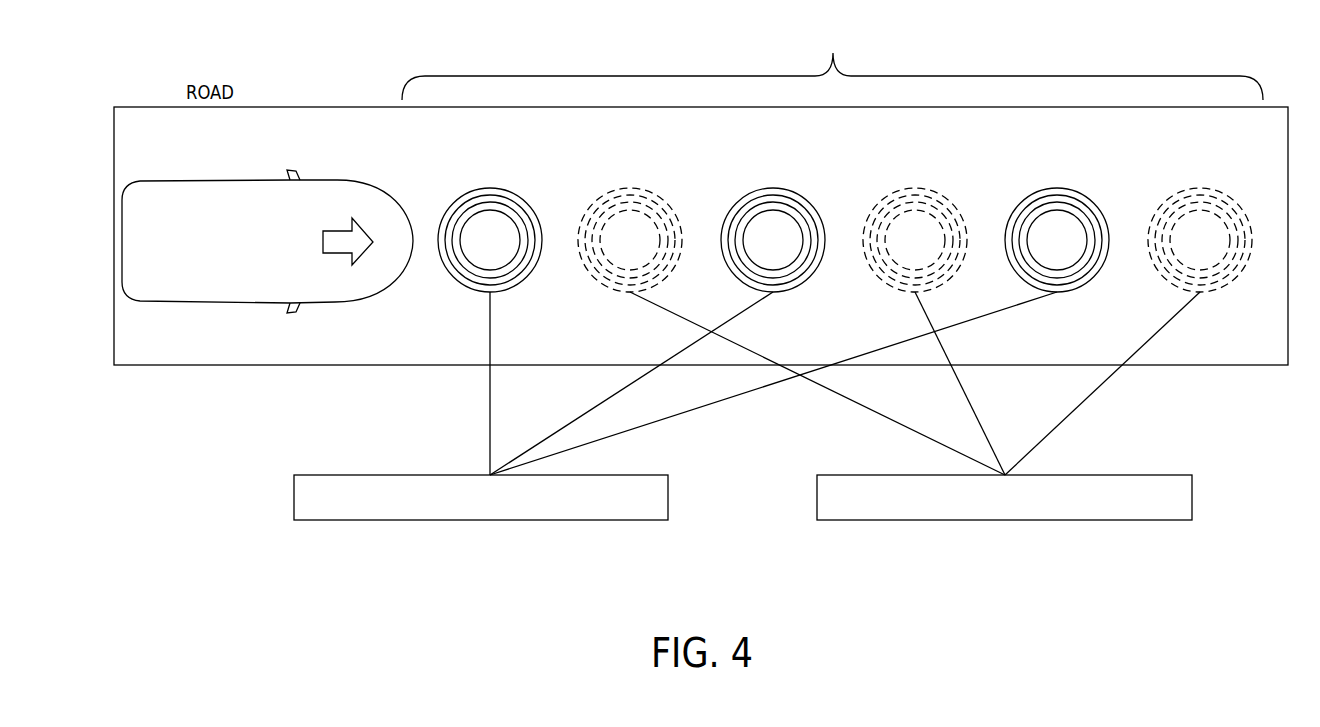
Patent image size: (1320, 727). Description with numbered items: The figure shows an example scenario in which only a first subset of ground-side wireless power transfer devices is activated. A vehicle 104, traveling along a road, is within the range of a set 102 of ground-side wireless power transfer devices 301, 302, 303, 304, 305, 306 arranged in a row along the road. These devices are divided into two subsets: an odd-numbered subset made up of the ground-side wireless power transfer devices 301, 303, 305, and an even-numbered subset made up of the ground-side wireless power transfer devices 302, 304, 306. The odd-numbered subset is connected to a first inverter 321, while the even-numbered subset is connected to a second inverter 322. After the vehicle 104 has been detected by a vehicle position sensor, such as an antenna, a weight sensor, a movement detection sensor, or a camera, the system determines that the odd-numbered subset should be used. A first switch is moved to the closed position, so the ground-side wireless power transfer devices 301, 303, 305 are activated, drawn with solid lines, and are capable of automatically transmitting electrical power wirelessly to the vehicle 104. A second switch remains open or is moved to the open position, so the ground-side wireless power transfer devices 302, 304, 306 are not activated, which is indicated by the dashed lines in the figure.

The set of ground-side wireless power transfer devices 102 is at (832, 63).
The vehicle 104 is at (158, 302).
The ground-side wireless power transfer device 301 is at (490, 188).
The ground-side wireless power transfer device 302 is at (630, 188).
The ground-side wireless power transfer device 303 is at (773, 188).
The ground-side wireless power transfer device 304 is at (915, 188).
The ground-side wireless power transfer device 305 is at (1057, 188).
The ground-side wireless power transfer device 306 is at (1200, 188).
The first inverter 321 is at (475, 520).
The second inverter 322 is at (1003, 520).